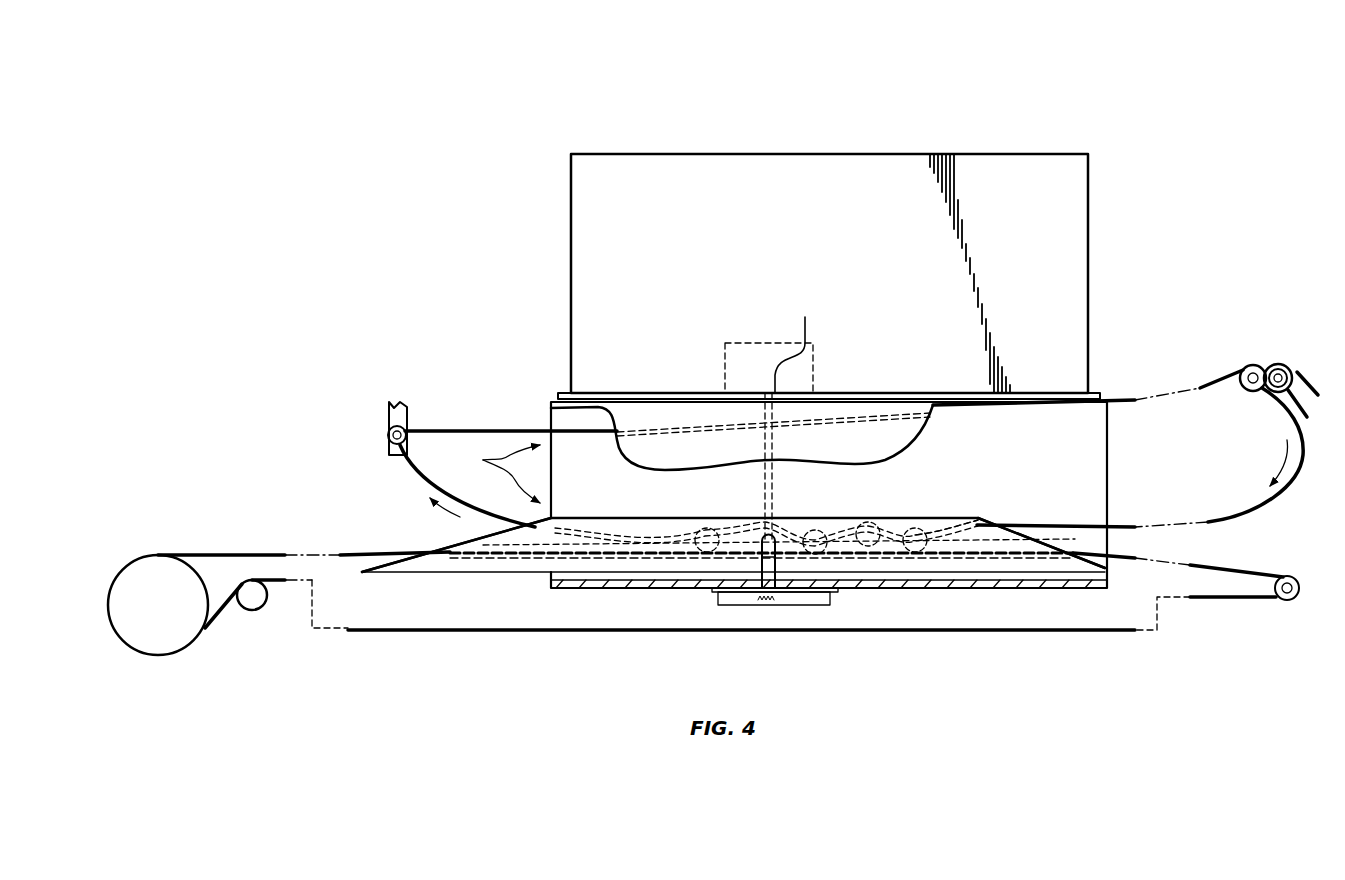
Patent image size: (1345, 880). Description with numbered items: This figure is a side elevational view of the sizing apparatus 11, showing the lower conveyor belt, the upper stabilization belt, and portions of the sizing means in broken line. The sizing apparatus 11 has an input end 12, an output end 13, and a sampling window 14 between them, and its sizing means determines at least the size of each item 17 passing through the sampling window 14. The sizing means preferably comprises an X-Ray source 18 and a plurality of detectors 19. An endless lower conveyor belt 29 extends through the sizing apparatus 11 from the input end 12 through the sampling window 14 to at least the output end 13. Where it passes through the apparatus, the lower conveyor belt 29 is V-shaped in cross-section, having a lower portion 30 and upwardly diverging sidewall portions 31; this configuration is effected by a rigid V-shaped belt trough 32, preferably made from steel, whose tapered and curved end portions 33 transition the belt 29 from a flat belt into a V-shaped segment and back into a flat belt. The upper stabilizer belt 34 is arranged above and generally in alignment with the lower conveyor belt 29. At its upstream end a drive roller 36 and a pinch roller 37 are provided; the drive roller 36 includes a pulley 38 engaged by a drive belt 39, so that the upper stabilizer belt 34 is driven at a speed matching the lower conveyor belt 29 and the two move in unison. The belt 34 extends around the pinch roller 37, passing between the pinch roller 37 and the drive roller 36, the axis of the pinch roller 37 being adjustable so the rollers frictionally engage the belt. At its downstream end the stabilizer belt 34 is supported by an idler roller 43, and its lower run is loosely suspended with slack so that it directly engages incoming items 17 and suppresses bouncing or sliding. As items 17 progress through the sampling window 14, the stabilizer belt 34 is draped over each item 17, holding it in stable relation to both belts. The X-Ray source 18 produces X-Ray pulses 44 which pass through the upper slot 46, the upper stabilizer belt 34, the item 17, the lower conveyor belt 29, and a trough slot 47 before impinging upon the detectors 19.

The sizing apparatus 11 is at (903, 86).
The input end 12 is at (1132, 499).
The output end 13 is at (495, 474).
The sampling window 14 is at (782, 497).
The item 17 is at (706, 527).
The X-Ray source 18 is at (740, 343).
The detectors 19 is at (757, 602).
The lower conveyor belt 29 is at (214, 552).
The lower portion 30 is at (483, 560).
The sidewall portions 31 is at (585, 527).
The belt trough 32 is at (958, 518).
The end portions 33 is at (425, 556).
The upper stabilizer belt 34 is at (487, 428).
The drive roller 36 is at (1270, 362).
The pinch roller 37 is at (1245, 366).
The pulley 38 is at (1282, 365).
The drive belt 39 is at (1300, 374).
The idler roller 43 is at (406, 412).
The X-Ray pulses 44 is at (776, 448).
The upper slot 46 is at (798, 341).
The trough slot 47 is at (771, 557).